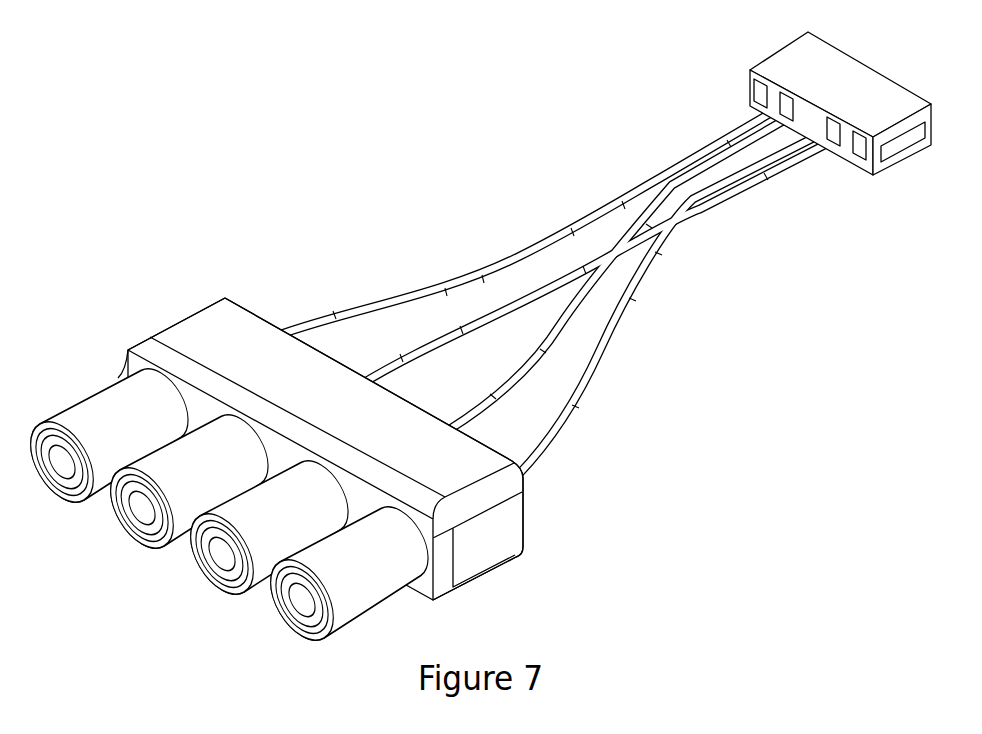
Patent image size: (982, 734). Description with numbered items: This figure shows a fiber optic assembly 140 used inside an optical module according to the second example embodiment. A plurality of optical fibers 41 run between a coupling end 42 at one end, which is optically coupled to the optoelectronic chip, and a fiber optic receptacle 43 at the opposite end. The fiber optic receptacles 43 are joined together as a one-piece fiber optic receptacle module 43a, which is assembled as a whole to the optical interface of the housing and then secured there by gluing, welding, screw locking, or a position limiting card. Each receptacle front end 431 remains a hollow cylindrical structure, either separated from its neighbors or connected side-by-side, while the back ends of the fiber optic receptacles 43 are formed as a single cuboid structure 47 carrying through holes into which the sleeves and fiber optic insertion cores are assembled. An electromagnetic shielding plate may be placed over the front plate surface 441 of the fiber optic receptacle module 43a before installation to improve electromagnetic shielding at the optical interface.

The fiber optic assembly 140 is at (189, 62).
The optical fibers 41 is at (625, 198).
The coupling end 42 is at (777, 70).
The fiber optic receptacle 43 is at (385, 592).
The fiber optic receptacle module 43a is at (284, 463).
The receptacle front end 431 is at (83, 410).
The front plate surface 441 is at (426, 605).
The cuboid structure 47 is at (222, 315).